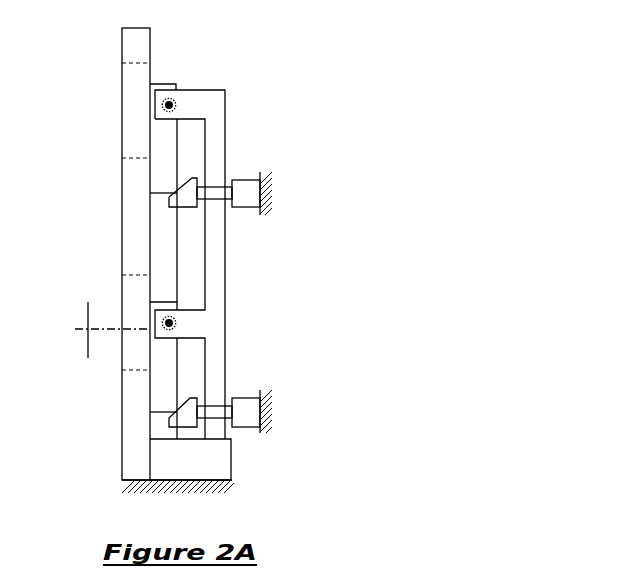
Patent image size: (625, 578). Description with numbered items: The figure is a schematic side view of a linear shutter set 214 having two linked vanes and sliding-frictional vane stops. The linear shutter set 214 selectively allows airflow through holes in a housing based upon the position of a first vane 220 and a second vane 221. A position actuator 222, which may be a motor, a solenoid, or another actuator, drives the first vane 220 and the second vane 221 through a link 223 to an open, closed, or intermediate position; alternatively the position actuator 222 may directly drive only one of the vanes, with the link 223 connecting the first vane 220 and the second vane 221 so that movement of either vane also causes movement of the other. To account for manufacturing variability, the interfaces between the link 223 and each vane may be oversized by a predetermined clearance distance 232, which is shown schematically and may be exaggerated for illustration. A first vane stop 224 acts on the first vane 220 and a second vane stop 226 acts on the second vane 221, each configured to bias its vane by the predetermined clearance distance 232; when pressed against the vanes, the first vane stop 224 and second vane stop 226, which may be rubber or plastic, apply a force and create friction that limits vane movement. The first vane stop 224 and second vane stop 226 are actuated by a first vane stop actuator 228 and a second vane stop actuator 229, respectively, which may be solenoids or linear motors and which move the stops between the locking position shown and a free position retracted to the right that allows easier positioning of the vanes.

The linear shutter set 214 is at (452, 136).
The first vane 220 is at (157, 138).
The second vane 221 is at (160, 392).
The position actuator 222 is at (210, 465).
The link 223 is at (218, 150).
The first vane stop 224 is at (183, 199).
The second vane stop 226 is at (190, 422).
The first vane stop actuator 228 is at (245, 193).
The second vane stop actuator 229 is at (253, 411).
The predetermined clearance distance 232 is at (87, 320).